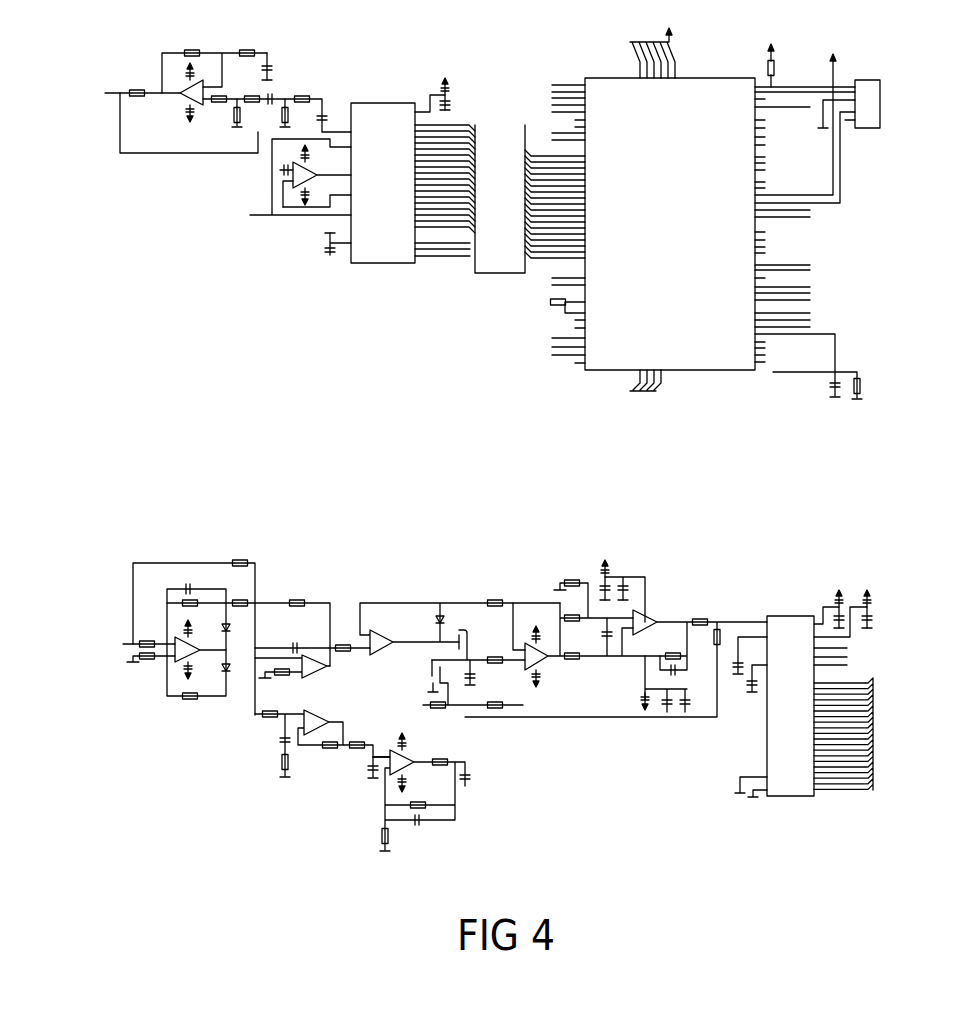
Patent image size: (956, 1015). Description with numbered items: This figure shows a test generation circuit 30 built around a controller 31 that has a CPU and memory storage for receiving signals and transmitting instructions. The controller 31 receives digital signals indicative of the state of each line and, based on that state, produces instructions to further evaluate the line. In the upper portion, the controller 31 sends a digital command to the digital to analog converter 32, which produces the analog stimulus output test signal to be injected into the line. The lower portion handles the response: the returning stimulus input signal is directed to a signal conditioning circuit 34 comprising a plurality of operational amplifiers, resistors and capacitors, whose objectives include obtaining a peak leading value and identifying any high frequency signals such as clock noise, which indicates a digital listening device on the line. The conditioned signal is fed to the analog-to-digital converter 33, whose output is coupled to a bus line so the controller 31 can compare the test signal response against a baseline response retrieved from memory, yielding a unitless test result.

The test generation circuit 30 is at (300, 287).
The controller 31 is at (702, 383).
The digital to analog converter 32 is at (381, 270).
The analog-to-digital converter 33 is at (790, 807).
The signal conditioning circuit 34 is at (477, 758).